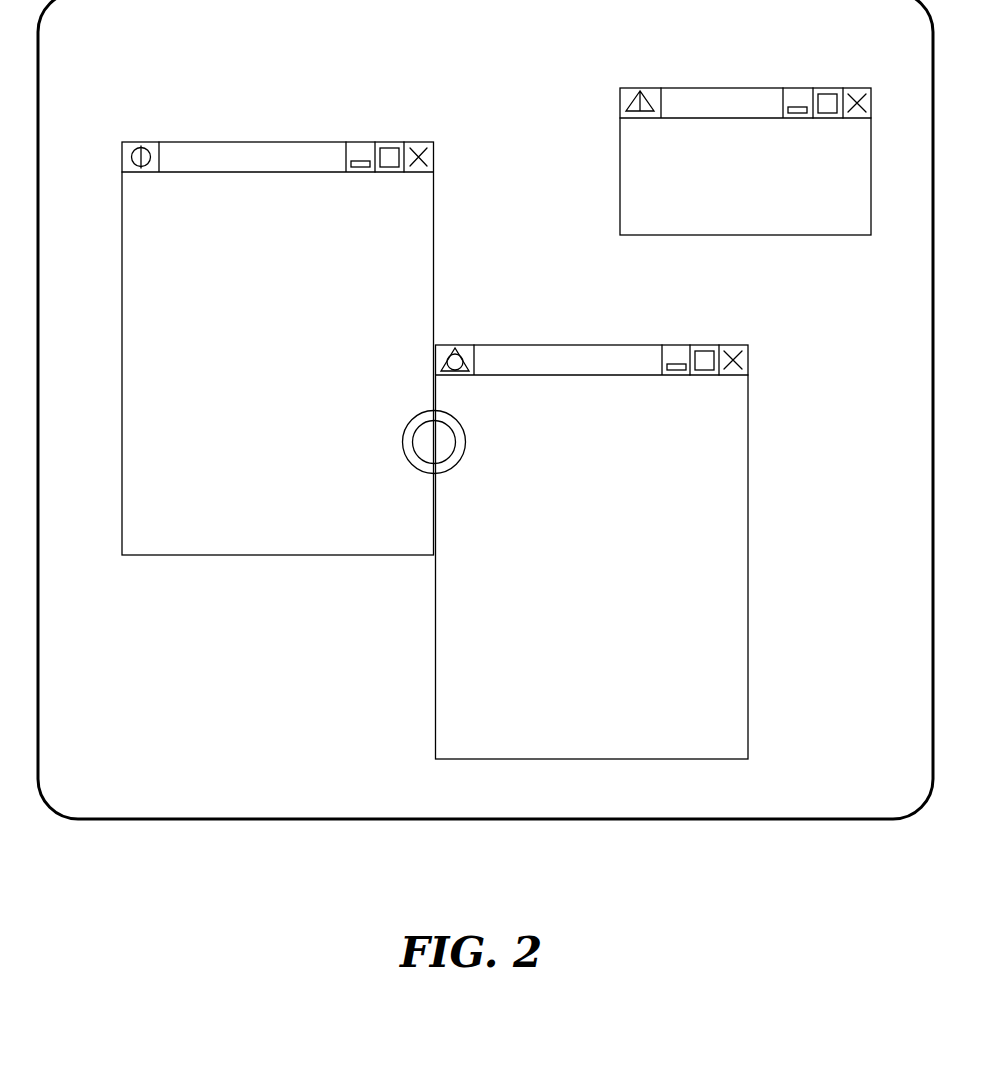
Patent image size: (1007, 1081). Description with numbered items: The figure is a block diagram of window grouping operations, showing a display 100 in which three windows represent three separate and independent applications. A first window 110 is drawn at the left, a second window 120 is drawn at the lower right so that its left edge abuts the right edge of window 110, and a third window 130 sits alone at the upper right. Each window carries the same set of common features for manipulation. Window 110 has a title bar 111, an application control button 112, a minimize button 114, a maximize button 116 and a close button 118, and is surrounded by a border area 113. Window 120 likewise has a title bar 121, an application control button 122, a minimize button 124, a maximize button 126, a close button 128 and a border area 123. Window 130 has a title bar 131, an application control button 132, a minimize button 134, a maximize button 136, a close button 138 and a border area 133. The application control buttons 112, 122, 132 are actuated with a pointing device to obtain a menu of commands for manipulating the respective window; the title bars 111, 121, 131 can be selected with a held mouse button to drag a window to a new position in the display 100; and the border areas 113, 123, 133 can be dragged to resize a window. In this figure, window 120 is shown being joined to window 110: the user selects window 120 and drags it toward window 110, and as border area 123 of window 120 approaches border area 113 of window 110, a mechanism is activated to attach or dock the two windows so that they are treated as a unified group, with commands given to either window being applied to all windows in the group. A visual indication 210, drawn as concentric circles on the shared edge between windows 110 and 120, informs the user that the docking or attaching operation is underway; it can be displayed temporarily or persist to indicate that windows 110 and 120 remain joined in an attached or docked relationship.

The display 100 is at (260, 819).
The window 110 is at (281, 341).
The title bar 111 is at (233, 158).
The application control button 112 is at (141, 141).
The border area 113 is at (297, 141).
The minimize button 114 is at (360, 151).
The maximize button 116 is at (390, 150).
The close button 118 is at (436, 157).
The window 120 is at (617, 550).
The title bar 121 is at (536, 354).
The application control button 122 is at (448, 344).
The border area 123 is at (597, 344).
The minimize button 124 is at (673, 351).
The maximize button 126 is at (700, 352).
The close button 128 is at (740, 349).
The window 130 is at (747, 149).
The title bar 131 is at (687, 94).
The application control button 132 is at (627, 87).
The border area 133 is at (742, 87).
The minimize button 134 is at (795, 97).
The maximize button 136 is at (832, 94).
The close button 138 is at (872, 100).
The visual indication 210 is at (466, 440).